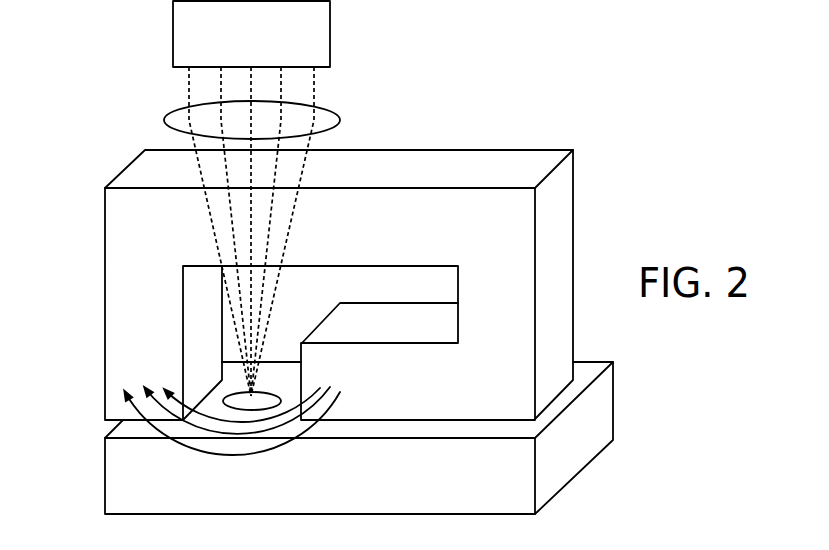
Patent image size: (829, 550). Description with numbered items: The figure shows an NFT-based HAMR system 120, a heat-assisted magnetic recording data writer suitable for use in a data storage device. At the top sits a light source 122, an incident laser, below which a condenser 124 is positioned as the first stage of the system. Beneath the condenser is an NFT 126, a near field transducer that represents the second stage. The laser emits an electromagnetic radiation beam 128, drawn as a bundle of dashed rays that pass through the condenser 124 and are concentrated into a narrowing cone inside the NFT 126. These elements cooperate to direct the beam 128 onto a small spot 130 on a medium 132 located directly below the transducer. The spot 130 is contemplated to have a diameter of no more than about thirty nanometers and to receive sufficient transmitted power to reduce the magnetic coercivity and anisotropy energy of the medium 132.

The NFT-based HAMR system 120 is at (701, 63).
The light source 122 is at (210, 22).
The condenser 124 is at (162, 120).
The NFT 126 is at (517, 163).
The beam 128 is at (210, 217).
The spot 130 is at (272, 398).
The medium 132 is at (597, 410).